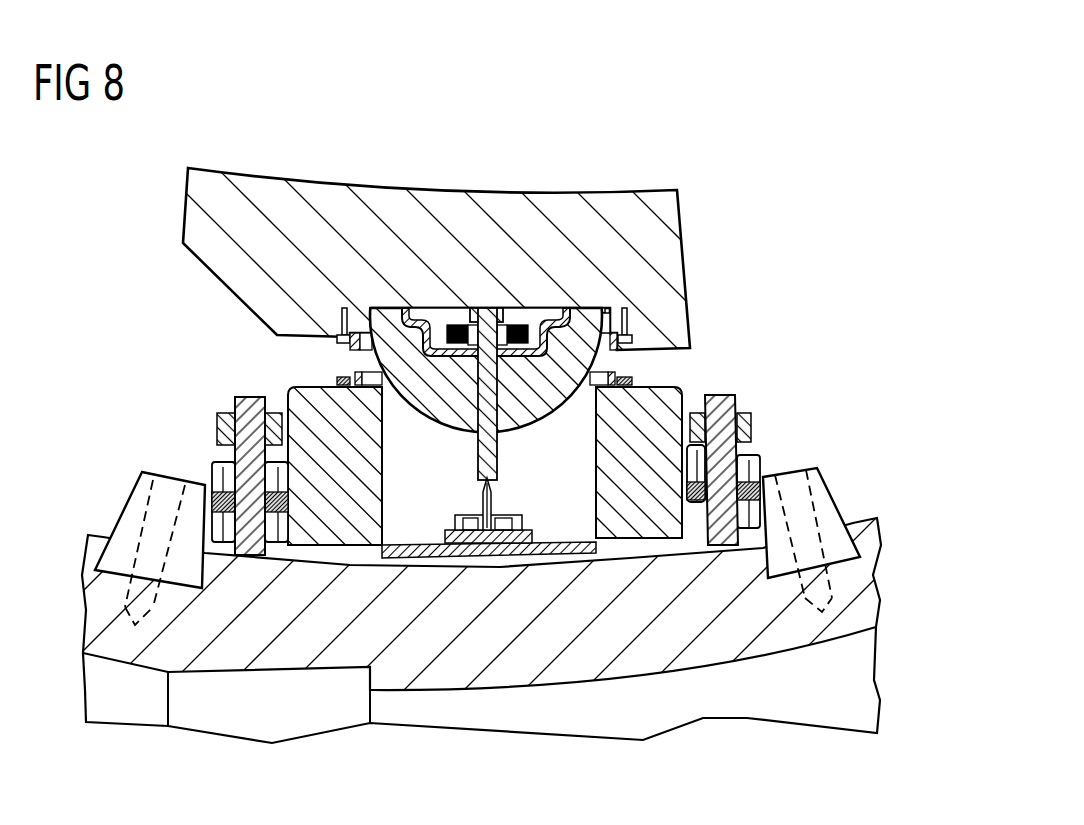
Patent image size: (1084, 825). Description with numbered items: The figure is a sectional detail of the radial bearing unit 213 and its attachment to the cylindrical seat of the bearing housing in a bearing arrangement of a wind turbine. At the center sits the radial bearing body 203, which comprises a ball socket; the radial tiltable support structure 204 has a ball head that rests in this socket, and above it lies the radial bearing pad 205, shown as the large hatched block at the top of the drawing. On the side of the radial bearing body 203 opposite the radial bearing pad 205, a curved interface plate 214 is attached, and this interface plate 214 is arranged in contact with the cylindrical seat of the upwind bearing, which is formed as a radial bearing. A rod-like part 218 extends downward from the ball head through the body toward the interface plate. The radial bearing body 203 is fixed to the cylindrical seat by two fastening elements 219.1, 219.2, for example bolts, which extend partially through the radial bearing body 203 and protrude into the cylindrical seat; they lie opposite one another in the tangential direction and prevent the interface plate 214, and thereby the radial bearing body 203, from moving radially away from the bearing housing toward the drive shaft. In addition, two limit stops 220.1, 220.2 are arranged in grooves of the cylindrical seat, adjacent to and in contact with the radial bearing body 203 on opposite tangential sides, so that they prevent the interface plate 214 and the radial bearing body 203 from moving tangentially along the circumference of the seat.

The radial bearing unit 213 is at (686, 158).
The radial bearing pad 205 is at (670, 218).
The radial tiltable support structure 204 is at (570, 358).
The radial bearing body 203 is at (684, 391).
The rod / pin 218 is at (492, 445).
The curved interface plate 214 is at (421, 555).
The first fastening element 219.1 is at (238, 398).
The second fastening element 219.2 is at (738, 448).
The first limit stop 220.1 is at (130, 511).
The second limit stop 220.2 is at (822, 505).